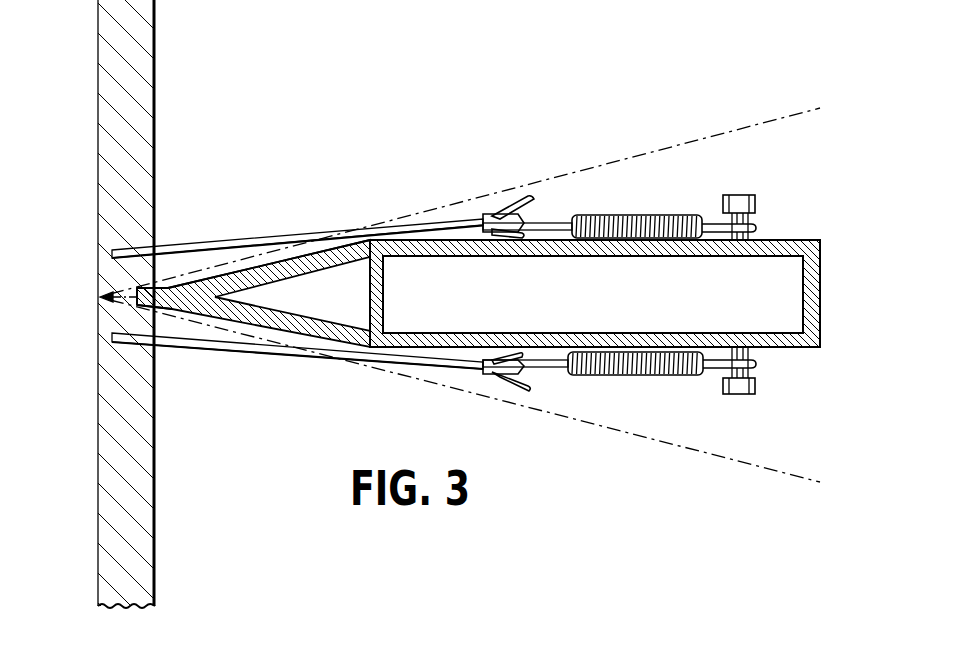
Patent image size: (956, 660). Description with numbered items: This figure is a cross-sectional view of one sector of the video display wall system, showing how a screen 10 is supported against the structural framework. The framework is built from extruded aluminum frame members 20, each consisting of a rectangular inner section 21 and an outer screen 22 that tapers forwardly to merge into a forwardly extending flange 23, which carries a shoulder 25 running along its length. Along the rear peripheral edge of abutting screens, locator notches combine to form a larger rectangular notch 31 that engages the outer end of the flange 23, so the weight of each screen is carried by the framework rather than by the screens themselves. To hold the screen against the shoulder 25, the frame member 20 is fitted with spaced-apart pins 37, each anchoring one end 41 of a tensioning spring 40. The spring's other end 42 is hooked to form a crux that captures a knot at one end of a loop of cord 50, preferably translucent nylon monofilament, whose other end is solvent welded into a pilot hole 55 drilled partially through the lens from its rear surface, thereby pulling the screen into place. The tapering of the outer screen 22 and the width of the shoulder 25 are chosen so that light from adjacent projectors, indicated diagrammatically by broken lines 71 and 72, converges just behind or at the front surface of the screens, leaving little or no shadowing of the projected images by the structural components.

The screen 10 is at (155, 545).
The frame member 20 is at (635, 315).
The rectangular inner section 21 is at (821, 280).
The outer screen 22 is at (317, 336).
The flange 23 is at (178, 308).
The shoulder 25 is at (183, 282).
The rectangular notch 31 is at (138, 290).
The pin 37 is at (757, 203).
The tensioning spring 40 is at (630, 215).
The spring end 41 is at (722, 232).
The spring other end 42 is at (483, 226).
The cord 50 is at (412, 223).
The pilot hole 55 is at (140, 343).
The broken line 71 is at (742, 128).
The broken line 72 is at (648, 438).